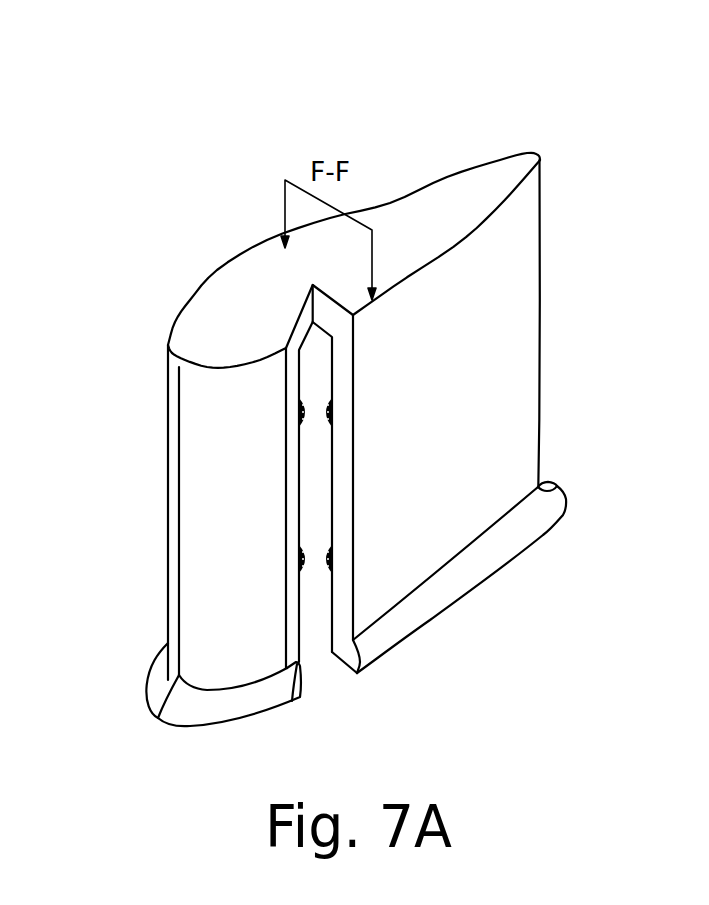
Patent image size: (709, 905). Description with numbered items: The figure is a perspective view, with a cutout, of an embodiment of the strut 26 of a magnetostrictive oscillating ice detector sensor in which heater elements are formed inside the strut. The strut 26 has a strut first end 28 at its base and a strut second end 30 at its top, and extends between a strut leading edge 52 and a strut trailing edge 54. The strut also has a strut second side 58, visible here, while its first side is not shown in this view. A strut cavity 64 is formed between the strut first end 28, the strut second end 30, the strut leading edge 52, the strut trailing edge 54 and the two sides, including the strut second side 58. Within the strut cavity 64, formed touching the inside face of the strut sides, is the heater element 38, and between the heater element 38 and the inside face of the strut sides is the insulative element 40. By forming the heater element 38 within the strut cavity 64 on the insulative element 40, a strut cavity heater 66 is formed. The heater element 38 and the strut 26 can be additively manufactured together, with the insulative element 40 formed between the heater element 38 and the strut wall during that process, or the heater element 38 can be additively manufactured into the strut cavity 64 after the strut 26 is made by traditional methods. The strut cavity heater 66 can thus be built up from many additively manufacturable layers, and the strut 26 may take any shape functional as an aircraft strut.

The strut cavity heater 66 is at (558, 118).
The strut trailing edge 54 is at (540, 222).
The insulative element 40 is at (302, 399).
The heater element 38 is at (330, 415).
The strut second side 58 is at (499, 465).
The strut second end 30 is at (168, 345).
The strut leading edge 52 is at (168, 408).
The strut 26 is at (168, 503).
The strut cavity 64 is at (332, 519).
The strut first end 28 is at (170, 682).